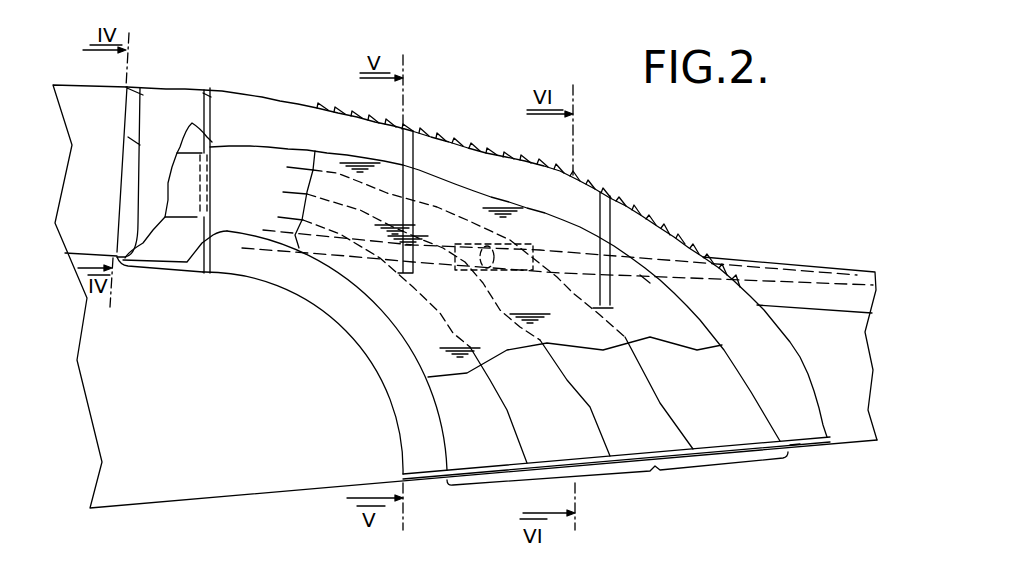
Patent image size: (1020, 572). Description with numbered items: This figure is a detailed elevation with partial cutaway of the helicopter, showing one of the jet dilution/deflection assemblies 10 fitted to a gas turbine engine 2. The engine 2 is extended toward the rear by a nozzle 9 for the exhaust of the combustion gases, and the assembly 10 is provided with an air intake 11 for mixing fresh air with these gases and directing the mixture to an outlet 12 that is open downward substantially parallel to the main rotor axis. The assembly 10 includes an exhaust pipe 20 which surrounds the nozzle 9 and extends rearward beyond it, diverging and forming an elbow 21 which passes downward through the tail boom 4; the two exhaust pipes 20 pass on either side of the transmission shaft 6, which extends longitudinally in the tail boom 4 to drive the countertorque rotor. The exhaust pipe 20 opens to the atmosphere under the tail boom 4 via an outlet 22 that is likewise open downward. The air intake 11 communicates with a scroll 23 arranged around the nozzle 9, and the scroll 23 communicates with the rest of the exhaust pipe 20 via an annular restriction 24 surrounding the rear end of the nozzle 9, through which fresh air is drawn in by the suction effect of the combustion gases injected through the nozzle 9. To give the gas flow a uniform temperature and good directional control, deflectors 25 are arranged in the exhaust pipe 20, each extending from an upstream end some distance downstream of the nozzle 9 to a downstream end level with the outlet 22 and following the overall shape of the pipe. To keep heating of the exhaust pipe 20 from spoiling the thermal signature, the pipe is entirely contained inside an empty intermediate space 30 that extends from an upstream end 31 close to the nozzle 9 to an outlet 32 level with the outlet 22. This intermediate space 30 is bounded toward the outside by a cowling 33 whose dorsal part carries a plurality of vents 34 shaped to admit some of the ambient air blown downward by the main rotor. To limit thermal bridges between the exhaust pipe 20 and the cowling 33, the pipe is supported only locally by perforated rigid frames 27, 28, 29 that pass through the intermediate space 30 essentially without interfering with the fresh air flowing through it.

The gas turbine engine 2 is at (77, 117).
The tail boom 4 is at (843, 393).
The transmission shaft 6 is at (767, 280).
The nozzle 9 is at (192, 177).
The jet dilution/deflection assembly 10 is at (577, 165).
The air intake 11 is at (135, 208).
The outlet 12 is at (798, 458).
The exhaust pipe 20 is at (288, 146).
The elbow 21 is at (645, 278).
The outlet 22 is at (617, 484).
The scroll 23 is at (193, 127).
The annular restriction 24 is at (212, 143).
The deflector 25 is at (670, 400).
The perforated rigid frame 27 is at (207, 100).
The perforated rigid frame 28 is at (408, 127).
The perforated rigid frame 29 is at (611, 217).
The intermediate space 30 is at (432, 152).
The upstream end 31 is at (172, 258).
The outlet 32 is at (403, 478).
The cowling 33 is at (360, 350).
The vent 34 is at (497, 143).